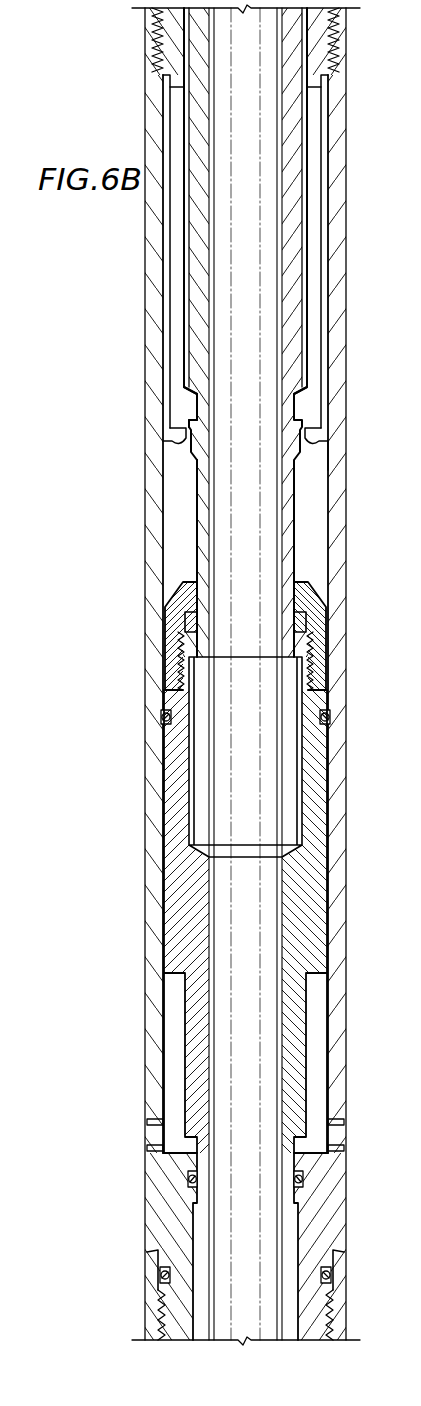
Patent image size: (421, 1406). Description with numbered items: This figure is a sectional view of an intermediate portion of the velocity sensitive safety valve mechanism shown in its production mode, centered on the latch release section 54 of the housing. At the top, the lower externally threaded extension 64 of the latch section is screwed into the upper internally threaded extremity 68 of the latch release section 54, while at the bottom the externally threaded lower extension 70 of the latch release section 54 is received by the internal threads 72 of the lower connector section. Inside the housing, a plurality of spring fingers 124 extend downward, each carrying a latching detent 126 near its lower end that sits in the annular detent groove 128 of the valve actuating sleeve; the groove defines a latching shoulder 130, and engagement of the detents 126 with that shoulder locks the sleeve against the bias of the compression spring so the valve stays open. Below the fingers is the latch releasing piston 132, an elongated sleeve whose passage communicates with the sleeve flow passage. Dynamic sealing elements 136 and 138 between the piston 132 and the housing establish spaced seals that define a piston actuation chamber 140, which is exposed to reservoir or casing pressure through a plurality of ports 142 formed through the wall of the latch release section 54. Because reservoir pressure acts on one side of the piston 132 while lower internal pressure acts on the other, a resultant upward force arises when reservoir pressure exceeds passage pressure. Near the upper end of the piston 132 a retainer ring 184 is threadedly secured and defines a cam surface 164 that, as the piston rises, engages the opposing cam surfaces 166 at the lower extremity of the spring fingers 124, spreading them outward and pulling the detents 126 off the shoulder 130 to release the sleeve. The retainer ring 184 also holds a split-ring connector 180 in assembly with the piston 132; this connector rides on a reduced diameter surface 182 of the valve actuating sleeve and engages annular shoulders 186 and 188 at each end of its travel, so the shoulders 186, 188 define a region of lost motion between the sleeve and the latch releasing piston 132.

The latch release section 54 is at (153, 781).
The lower externally threaded extension 64 is at (163, 71).
The upper internally threaded extremity 68 is at (158, 46).
The externally threaded lower extension 70 is at (318, 1308).
The internal threads 72 is at (340, 1332).
The spring fingers 124 is at (312, 158).
The latching detent 126 is at (192, 415).
The annular detent groove 128 is at (188, 391).
The latching shoulder 130 is at (313, 411).
The latch releasing piston 132 is at (180, 932).
The dynamic sealing element 136 is at (333, 716).
The dynamic sealing element 138 is at (300, 1180).
The piston actuation chamber 140 is at (172, 1050).
The ports 142 is at (157, 1139).
The cam surface 164 is at (181, 592).
The opposing cam surfaces 166 is at (181, 443).
The split-ring connector 180 is at (177, 637).
The reduced diameter surface 182 is at (196, 512).
The retainer ring 184 is at (186, 616).
The annular shoulder 186 is at (316, 470).
The annular shoulder 188 is at (306, 626).